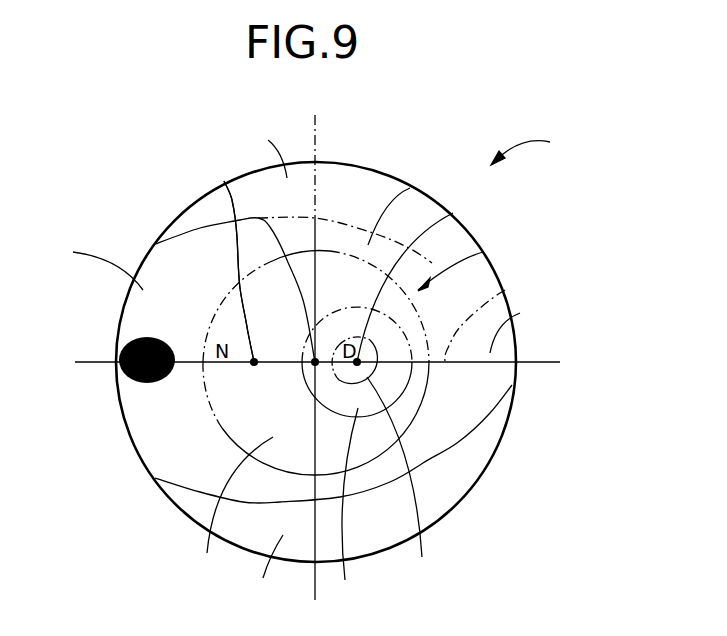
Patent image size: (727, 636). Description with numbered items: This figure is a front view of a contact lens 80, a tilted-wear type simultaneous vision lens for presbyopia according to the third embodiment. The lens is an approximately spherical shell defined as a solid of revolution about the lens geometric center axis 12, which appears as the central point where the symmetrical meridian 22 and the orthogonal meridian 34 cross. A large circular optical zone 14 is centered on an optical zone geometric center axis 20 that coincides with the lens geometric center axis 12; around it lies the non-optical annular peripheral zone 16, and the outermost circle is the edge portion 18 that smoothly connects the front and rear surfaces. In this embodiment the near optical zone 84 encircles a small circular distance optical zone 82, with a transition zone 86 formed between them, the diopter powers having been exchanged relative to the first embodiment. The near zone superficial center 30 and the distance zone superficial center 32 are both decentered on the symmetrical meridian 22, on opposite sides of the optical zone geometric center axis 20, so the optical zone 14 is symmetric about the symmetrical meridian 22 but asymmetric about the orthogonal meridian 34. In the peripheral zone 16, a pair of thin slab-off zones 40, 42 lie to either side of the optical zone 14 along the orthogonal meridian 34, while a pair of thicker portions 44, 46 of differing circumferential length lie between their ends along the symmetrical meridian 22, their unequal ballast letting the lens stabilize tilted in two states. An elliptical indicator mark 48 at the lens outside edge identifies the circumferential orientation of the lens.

The lens geometric center axis 12 is at (224, 181).
The optical zone geometric center axis 20 is at (193, 251).
The optical zone 14 is at (483, 252).
The peripheral zone 16 is at (410, 188).
The edge portion 18 is at (372, 168).
The symmetrical meridian 22 is at (490, 300).
The near zone superficial center 30 is at (453, 213).
The distance zone superficial center 32 is at (185, 212).
The orthogonal meridian 34 is at (317, 143).
The slab-off zone 40 is at (262, 149).
The slab-off zone 42 is at (267, 572).
The thicker portion 44 is at (94, 266).
The thicker portion 46 is at (520, 313).
The indicator mark 48 is at (132, 338).
The contact lens 80 is at (535, 147).
The distance optical zone 82 is at (398, 482).
The near optical zone 84 is at (333, 485).
The transition zone 86 is at (349, 509).